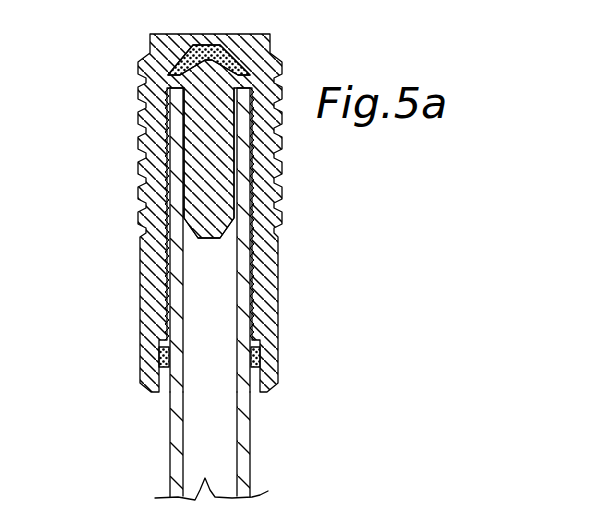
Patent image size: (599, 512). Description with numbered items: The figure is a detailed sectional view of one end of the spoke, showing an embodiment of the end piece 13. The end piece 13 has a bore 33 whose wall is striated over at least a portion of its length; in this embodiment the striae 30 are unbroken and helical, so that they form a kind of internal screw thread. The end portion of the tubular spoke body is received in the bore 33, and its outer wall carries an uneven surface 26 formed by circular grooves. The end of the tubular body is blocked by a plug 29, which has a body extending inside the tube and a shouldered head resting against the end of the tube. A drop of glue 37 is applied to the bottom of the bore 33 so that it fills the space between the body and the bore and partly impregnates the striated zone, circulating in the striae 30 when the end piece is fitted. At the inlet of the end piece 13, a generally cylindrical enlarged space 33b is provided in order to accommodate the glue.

The end piece 13 is at (270, 57).
The drop of glue 37 is at (150, 55).
The plug 29 is at (210, 178).
The striae 30 is at (256, 236).
The bore 33 is at (245, 277).
The uneven surface 26 is at (250, 318).
The enlarged space 33b is at (252, 392).